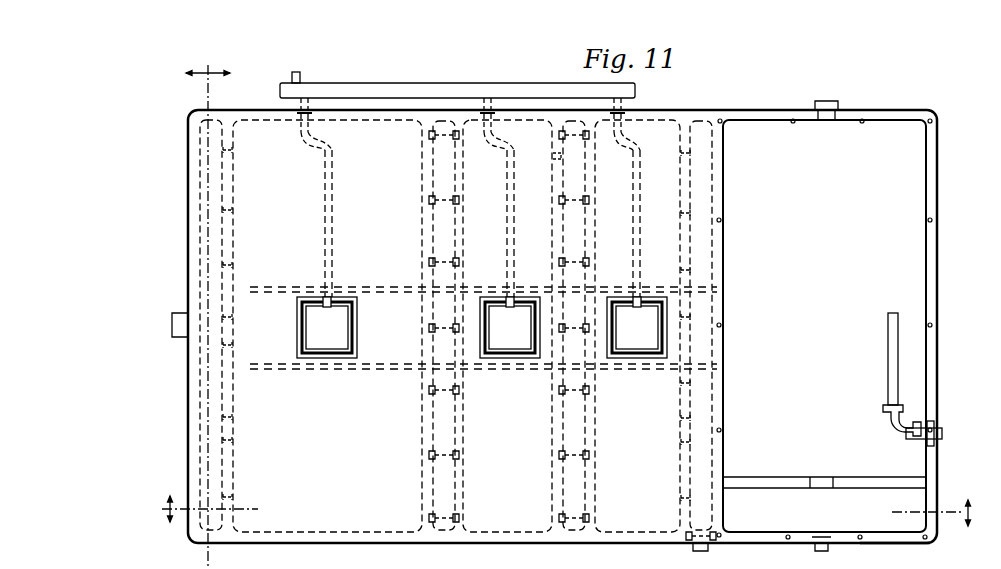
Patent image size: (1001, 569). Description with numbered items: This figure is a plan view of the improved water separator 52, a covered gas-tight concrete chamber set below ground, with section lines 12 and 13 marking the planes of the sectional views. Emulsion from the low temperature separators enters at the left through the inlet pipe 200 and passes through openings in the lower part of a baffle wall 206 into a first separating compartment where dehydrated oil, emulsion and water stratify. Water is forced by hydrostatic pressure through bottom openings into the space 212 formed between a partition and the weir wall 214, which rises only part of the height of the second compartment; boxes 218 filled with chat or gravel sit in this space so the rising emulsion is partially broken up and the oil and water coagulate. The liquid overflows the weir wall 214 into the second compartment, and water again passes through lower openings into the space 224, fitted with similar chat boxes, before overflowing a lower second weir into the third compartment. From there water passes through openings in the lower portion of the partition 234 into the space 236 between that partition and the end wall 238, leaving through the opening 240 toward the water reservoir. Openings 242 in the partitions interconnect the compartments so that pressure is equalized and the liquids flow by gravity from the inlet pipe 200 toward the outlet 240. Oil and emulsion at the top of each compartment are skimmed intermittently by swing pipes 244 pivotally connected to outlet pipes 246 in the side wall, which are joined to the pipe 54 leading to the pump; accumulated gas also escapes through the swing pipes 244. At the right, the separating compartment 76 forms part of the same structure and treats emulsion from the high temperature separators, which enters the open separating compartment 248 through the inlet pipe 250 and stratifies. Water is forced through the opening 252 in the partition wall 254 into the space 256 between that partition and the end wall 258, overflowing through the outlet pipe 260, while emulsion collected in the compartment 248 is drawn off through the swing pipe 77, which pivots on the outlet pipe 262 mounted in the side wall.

The section line 12- 12 is at (566, 511).
The section line 13- 13 is at (208, 309).
The water separator 52 is at (752, 112).
The pipe 54 is at (300, 80).
The separating compartment 76 is at (910, 263).
The swing pipe 77 is at (888, 346).
The inlet pipe 200 is at (172, 324).
The baffle wall 206 is at (236, 256).
The space 212 is at (443, 482).
The weir wall 214 is at (463, 418).
The boxes 218 is at (561, 456).
The space 224 is at (575, 496).
The partition 234 is at (688, 203).
The space 236 is at (700, 462).
The end wall 238 is at (721, 248).
The opening 240 is at (706, 550).
The openings 242 is at (557, 157).
The swing pipes 244 is at (333, 243).
The outlet pipes 246 is at (310, 105).
The separating compartment 248 is at (824, 326).
The inlet pipe 250 is at (838, 104).
The opening 252 is at (818, 478).
The partition wall 254 is at (866, 485).
The space 256 is at (763, 512).
The end wall 258 is at (890, 541).
The outlet pipe 260 is at (826, 550).
The outlet pipe 262 is at (934, 428).